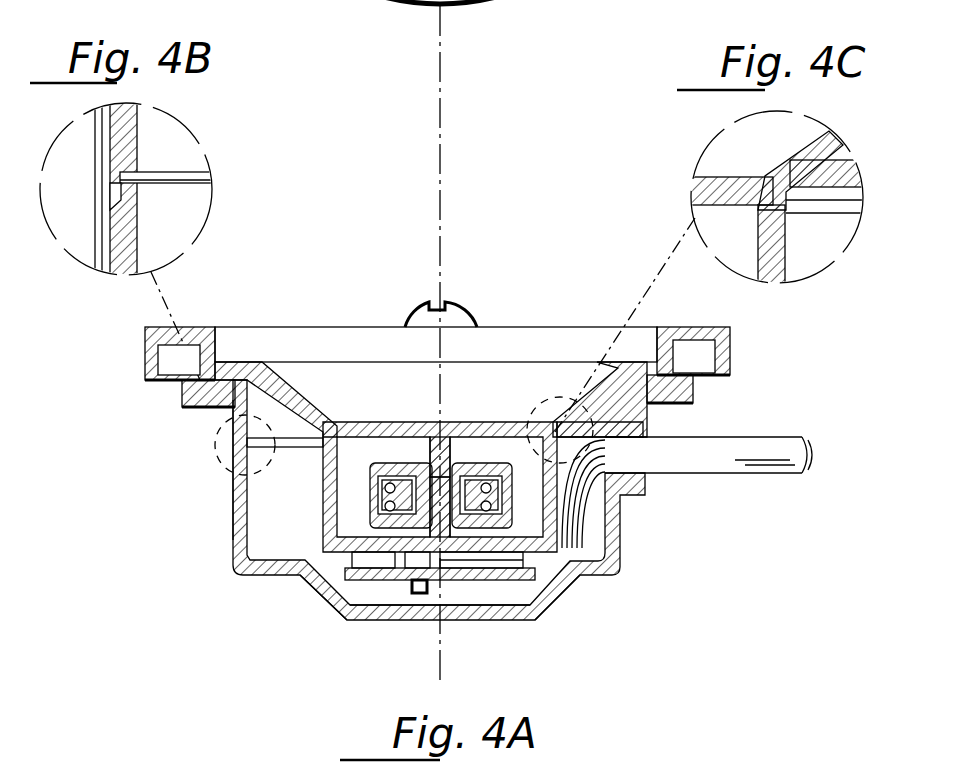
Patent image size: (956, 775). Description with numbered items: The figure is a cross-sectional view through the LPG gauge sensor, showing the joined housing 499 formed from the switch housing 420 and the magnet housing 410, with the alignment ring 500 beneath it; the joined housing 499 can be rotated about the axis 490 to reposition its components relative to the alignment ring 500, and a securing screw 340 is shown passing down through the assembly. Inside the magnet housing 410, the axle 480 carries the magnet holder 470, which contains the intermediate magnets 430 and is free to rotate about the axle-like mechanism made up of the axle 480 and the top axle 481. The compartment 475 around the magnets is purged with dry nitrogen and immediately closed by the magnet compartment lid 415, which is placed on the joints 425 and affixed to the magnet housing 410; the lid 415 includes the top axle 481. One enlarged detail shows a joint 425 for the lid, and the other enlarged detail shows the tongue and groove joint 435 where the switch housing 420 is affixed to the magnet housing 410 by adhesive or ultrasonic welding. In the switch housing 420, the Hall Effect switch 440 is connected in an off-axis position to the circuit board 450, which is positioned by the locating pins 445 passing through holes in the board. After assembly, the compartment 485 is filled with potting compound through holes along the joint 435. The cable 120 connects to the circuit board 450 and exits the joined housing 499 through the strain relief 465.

In FIG. 4A, the cable 120 is at (758, 437).
In FIG. 4A, the securing screw 340 is at (428, 306).
In FIG. 4A, the magnet housing 410 is at (175, 330).
In FIG. 4A, the magnet compartment lid 415 is at (460, 417).
In FIG. 4A, the switch housing 420 is at (238, 560).
In FIG. 4C, the joint 425 is at (763, 177).
In FIG. 4A, the intermediate magnet 430 is at (333, 548).
In FIG. 4B, the joint 435 is at (133, 203).
In FIG. 4A, the Hall Effect switch 440 is at (380, 558).
In FIG. 4A, the locating pin 445 is at (402, 597).
In FIG. 4A, the circuit board 450 is at (528, 620).
In FIG. 4A, the strain relief 465 is at (647, 488).
In FIG. 4A, the magnet holder 470 is at (510, 472).
In FIG. 4A, the compartment 475 is at (352, 467).
In FIG. 4A, the axle 480 is at (442, 532).
In FIG. 4A, the top axle 481 is at (435, 458).
In FIG. 4A, the compartment 485 is at (273, 533).
In FIG. 4A, the axis 490 is at (441, 223).
In FIG. 4A, the joined housing 499 is at (232, 490).
In FIG. 4A, the alignment ring 500 is at (182, 393).